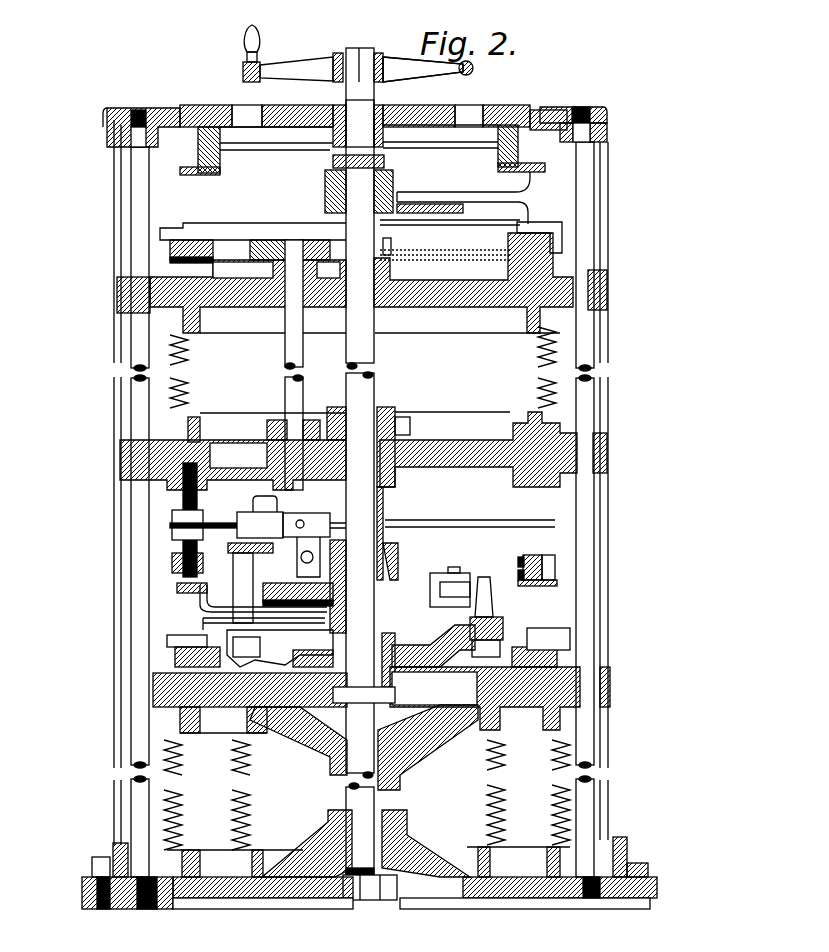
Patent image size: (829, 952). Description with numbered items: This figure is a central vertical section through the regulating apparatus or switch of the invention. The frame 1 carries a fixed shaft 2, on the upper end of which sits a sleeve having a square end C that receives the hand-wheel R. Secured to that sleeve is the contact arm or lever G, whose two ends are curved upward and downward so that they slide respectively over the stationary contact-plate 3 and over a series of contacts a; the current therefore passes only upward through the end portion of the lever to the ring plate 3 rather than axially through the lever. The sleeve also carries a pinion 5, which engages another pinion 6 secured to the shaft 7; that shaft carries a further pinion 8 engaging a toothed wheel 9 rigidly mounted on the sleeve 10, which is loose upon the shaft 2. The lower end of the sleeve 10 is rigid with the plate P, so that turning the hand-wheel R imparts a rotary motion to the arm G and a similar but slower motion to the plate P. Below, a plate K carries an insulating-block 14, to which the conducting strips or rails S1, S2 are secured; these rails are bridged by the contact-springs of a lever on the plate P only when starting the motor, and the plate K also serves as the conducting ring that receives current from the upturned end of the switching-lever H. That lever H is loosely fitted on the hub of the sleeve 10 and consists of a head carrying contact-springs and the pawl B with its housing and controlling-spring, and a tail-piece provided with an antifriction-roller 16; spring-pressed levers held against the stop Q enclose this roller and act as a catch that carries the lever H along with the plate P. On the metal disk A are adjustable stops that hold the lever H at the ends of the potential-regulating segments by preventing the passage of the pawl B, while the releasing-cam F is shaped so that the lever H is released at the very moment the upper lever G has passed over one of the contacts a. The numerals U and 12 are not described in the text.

The square end C is at (362, 105).
The shaft coupling U is at (360, 125).
The hand-wheel R is at (428, 80).
The contact-plate 3 is at (250, 160).
The fixed shaft 2 is at (325, 193).
The contact arm or lever G is at (463, 198).
The contacts a is at (532, 232).
The pinion 6 is at (266, 237).
The pinion 5 is at (392, 246).
The shaft 7 is at (294, 365).
The pinion 8 is at (275, 420).
The toothed wheel 9 is at (410, 428).
The sleeve 10 is at (385, 505).
The pawl B is at (258, 520).
The metal disk A is at (470, 513).
The releasing-cam F is at (236, 548).
The wedge 12 is at (398, 585).
The antifriction-roller 16 is at (462, 580).
The conducting strip or rail S1 is at (513, 559).
The conducting strip or rail S2 is at (513, 574).
The insulating-block 14 is at (550, 563).
The plate K is at (540, 606).
The lever H is at (253, 616).
The stop Q is at (498, 603).
The plate P is at (312, 660).
The frame 1 is at (400, 765).